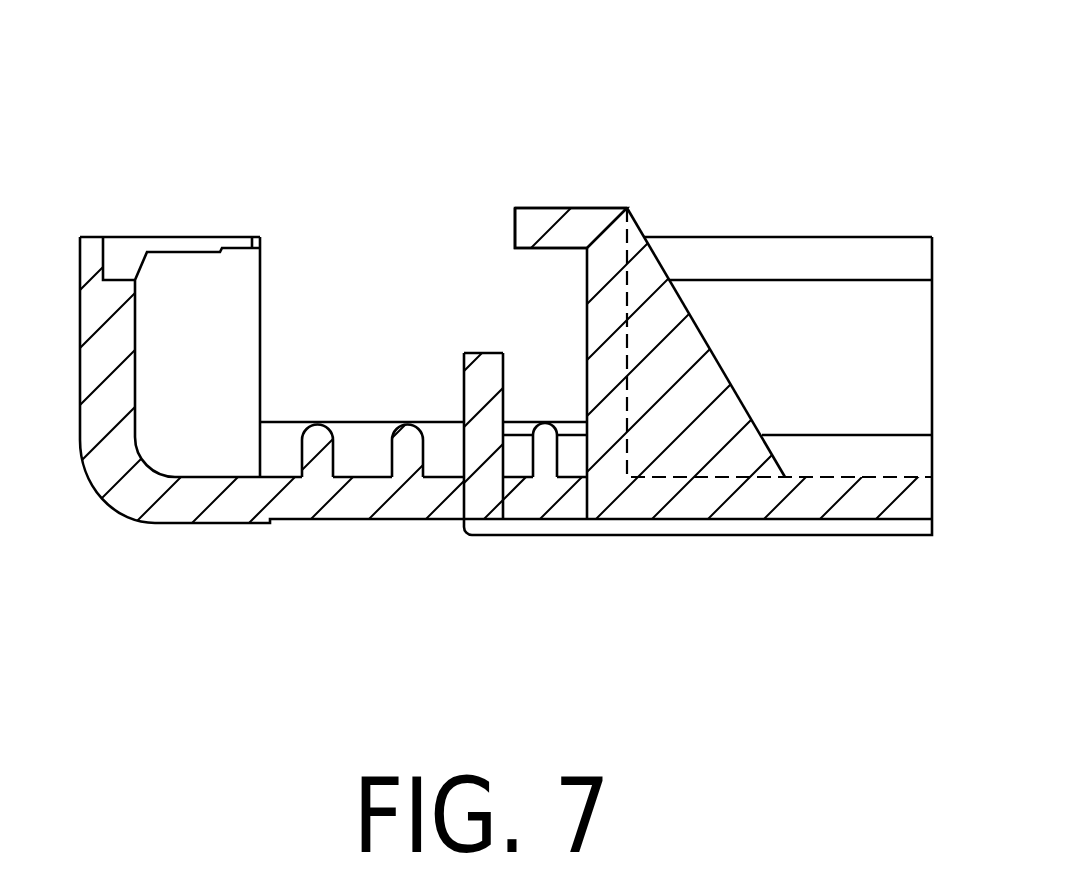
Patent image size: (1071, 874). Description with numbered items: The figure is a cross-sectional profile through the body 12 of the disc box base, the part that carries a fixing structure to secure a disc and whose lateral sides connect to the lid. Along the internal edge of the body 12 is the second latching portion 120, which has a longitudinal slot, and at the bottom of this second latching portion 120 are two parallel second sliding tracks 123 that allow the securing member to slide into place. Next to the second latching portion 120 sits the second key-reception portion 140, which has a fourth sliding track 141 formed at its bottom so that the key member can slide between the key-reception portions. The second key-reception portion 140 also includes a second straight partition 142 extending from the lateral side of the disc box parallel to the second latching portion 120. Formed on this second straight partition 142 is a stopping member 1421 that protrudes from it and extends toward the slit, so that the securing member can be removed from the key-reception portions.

The body 12 is at (835, 499).
The second latching portion 120 is at (357, 353).
The second sliding tracks 123 is at (321, 447).
The second key-reception portion 140 is at (535, 437).
The fourth sliding track 141 is at (546, 443).
The second straight partition 142 is at (602, 360).
The stopping member 1421 is at (542, 220).